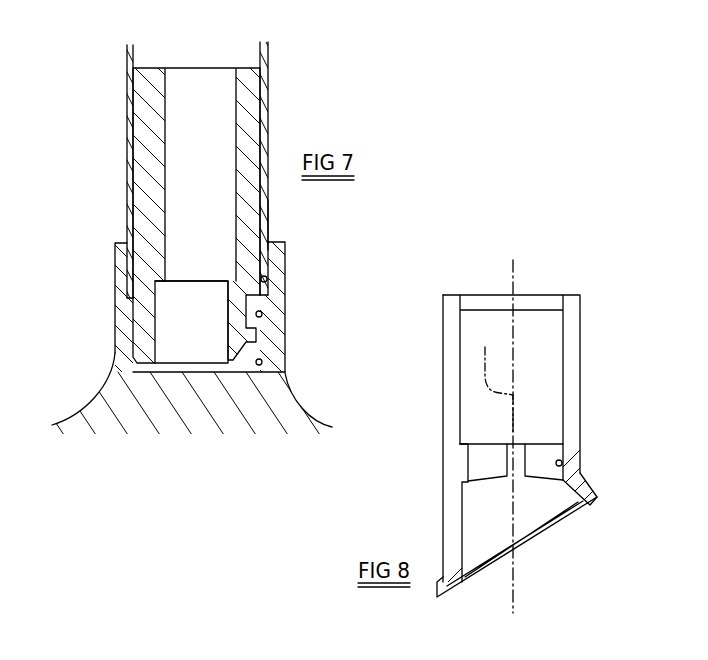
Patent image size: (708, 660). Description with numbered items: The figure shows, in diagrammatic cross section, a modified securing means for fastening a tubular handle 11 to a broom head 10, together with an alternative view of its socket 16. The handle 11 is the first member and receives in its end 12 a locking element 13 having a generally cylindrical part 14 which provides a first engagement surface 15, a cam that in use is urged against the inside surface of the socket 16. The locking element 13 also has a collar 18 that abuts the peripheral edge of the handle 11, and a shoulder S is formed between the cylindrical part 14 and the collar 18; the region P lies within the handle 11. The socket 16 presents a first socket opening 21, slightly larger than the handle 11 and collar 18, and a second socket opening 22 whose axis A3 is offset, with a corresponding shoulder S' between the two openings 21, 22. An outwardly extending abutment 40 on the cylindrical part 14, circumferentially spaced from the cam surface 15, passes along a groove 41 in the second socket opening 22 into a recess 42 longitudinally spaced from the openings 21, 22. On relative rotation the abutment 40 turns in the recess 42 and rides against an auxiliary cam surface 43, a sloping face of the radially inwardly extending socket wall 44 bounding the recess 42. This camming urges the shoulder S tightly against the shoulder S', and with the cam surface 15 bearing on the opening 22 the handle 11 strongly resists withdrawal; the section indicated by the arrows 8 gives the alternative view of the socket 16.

In FIG. 7, the pressure chamber / bore P is at (162, 97).
In FIG. 7, the locking element 13 is at (245, 66).
In FIG. 7, the handle 11 is at (272, 56).
In FIG. 7, the end 12 is at (270, 226).
In FIG. 7, the collar 18 is at (116, 246).
In FIG. 7, the first socket opening 21 is at (272, 283).
In FIG. 8, the first socket opening 21 is at (558, 383).
In FIG. 7, the cylindrical part 14 is at (150, 300).
In FIG. 7, the first engagement surface 15 is at (127, 333).
In FIG. 7, the socket 16 is at (113, 348).
In FIG. 7, the broom head 10 is at (68, 416).
In FIG. 7, the shoulder S is at (232, 267).
In FIG. 7, the second socket opening 22 is at (262, 315).
In FIG. 8, the second socket opening 22 is at (557, 463).
In FIG. 7, the abutment 40 is at (275, 338).
In FIG. 7, the recess 42 is at (285, 373).
In FIG. 8, the recess 42 is at (566, 505).
In FIG. 8, the section line 8 is at (513, 260).
In FIG. 8, the shoulder S' is at (486, 429).
In FIG. 8, the socket wall 44 is at (462, 470).
In FIG. 8, the auxiliary cam surface 43 is at (466, 494).
In FIG. 8, the groove 41 is at (515, 472).
In FIG. 8, the axis A3 is at (489, 378).